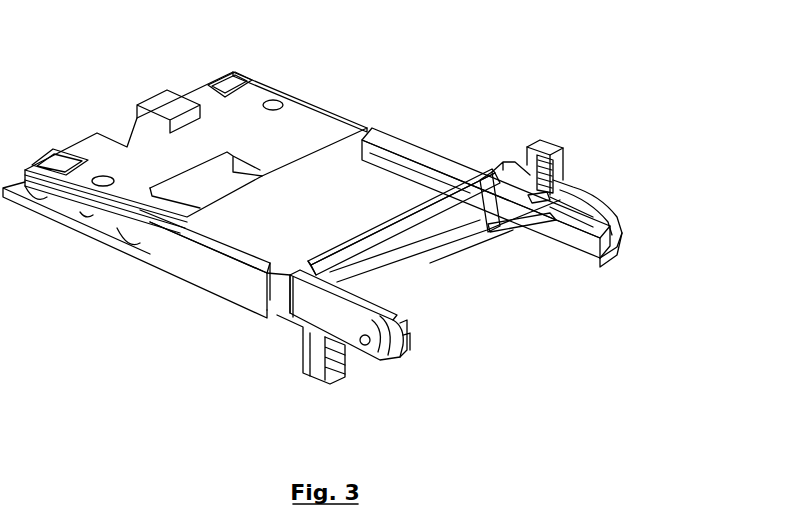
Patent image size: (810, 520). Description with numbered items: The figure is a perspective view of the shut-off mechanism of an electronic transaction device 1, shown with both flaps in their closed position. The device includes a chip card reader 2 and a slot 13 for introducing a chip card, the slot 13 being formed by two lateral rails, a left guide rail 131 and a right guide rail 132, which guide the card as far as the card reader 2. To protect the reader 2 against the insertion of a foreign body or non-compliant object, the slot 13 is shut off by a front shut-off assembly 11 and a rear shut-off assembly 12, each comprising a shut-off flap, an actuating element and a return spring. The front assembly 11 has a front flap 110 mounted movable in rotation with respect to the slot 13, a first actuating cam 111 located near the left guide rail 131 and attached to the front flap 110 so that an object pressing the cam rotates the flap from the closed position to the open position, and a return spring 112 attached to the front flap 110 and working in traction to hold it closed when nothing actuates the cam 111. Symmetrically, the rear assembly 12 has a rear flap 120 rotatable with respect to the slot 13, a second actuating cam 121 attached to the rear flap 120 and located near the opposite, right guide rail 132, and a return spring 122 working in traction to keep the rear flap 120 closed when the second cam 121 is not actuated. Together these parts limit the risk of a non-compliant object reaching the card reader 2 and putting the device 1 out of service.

The transaction device 1 is at (683, 168).
The chip card reader 2 is at (92, 150).
The front shut-off assembly 11 is at (562, 277).
The rear shut-off assembly 12 is at (430, 53).
The slot 13 is at (613, 243).
The front flap 110 is at (390, 262).
The first actuating cam 111 is at (313, 277).
The return spring 112 is at (380, 362).
The rear flap 120 is at (428, 198).
The second actuating cam 121 is at (493, 200).
The return spring 122 is at (543, 147).
The left guide rail 131 is at (207, 263).
The right guide rail 132 is at (400, 142).